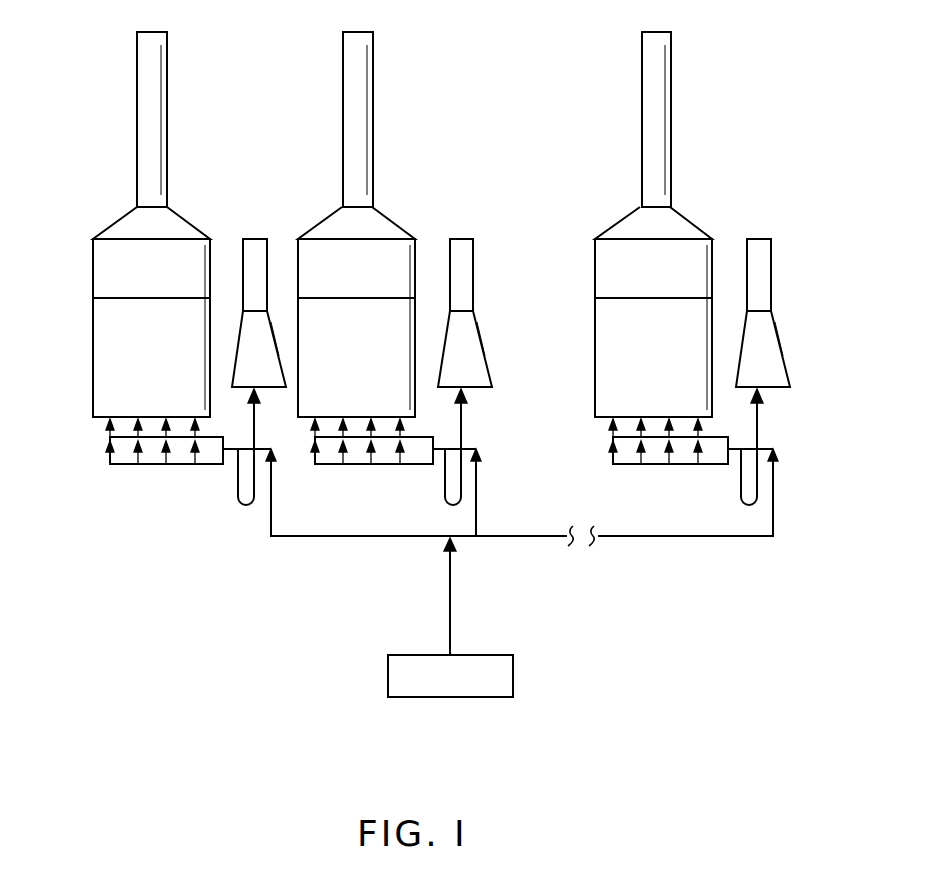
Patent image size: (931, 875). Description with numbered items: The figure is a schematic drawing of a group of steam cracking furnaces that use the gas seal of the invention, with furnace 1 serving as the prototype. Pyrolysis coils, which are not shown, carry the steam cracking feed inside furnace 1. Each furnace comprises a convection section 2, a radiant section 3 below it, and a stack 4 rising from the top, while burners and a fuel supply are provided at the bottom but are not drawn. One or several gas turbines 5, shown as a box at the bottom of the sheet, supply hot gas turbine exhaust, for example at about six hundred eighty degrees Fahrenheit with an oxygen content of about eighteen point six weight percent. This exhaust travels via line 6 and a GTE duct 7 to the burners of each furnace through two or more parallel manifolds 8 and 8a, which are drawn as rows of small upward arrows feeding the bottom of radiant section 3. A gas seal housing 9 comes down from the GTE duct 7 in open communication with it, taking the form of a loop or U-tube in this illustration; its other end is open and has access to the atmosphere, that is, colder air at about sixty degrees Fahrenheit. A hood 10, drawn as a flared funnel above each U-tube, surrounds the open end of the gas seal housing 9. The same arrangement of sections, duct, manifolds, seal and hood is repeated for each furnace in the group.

The furnace 1 is at (91, 326).
The convection section 2 is at (92, 264).
The radiant section 3 is at (100, 371).
The stack 4 is at (140, 103).
The gas turbines 5 is at (487, 655).
The line 6 is at (448, 590).
The GTE duct 7 is at (248, 447).
The manifold 8 is at (139, 467).
The manifold 8a is at (108, 438).
The gas seal housing 9 is at (238, 485).
The hood 10 is at (247, 327).